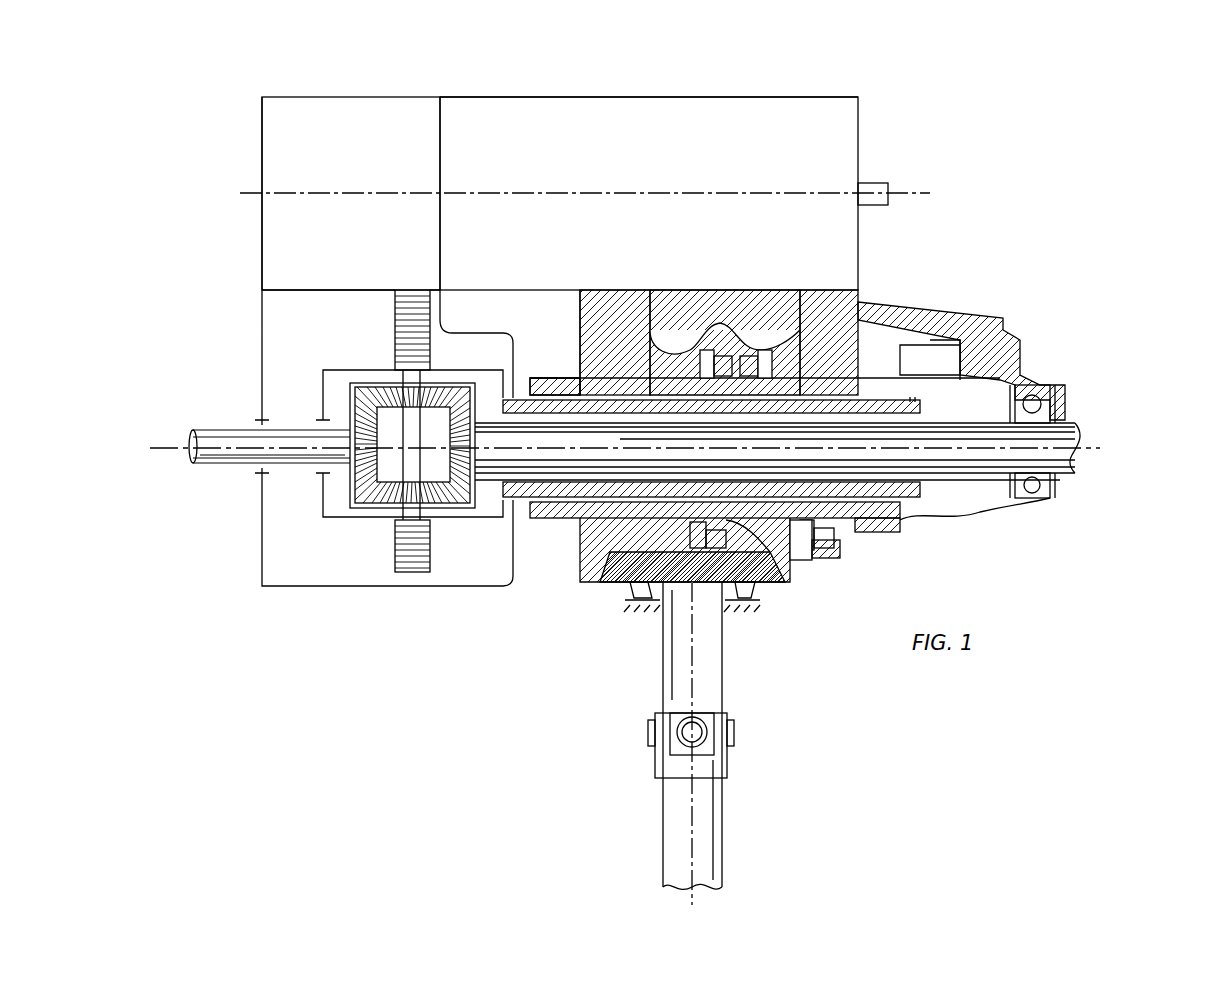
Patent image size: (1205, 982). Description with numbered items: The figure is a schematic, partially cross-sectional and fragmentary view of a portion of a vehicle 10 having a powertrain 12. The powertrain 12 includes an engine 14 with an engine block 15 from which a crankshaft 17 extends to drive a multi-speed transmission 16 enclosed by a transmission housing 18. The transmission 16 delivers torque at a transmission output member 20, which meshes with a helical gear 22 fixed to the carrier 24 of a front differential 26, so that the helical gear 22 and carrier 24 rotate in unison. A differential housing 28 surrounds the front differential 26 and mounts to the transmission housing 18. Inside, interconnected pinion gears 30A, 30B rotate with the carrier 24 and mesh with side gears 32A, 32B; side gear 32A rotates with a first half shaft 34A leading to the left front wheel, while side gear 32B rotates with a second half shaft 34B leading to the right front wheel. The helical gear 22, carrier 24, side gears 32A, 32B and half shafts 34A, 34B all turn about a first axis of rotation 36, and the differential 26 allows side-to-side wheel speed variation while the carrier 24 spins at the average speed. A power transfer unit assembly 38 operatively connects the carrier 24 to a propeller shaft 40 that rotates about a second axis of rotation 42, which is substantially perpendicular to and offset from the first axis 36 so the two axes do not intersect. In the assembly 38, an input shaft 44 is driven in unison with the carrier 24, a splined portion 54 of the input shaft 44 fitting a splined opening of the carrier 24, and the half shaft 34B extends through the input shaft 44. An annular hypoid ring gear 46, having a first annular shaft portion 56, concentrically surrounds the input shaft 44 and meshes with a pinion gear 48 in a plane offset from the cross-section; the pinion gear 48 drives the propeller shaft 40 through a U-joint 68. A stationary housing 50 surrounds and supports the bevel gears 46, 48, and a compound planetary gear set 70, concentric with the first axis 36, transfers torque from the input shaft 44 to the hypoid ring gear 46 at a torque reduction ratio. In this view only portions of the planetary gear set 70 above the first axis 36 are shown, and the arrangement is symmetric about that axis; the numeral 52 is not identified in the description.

The vehicle 10 is at (325, 83).
The powertrain 12 is at (937, 192).
The engine 14 is at (661, 228).
The engine block 15 is at (512, 97).
The multi-speed transmission 16 is at (358, 162).
The crankshaft 17 is at (873, 205).
The transmission housing 18 is at (262, 162).
The transmission output member 20 is at (406, 299).
The helical gear 22 is at (406, 355).
The differential carrier 24 is at (348, 518).
The front differential 26 is at (312, 444).
The differential housing 28 is at (262, 357).
The pinion gear 30A is at (400, 396).
The pinion gear 30B is at (400, 492).
The side gear 32A is at (367, 430).
The side gear 32B is at (462, 470).
The first half shaft 34A is at (232, 465).
The second half shaft 34B is at (506, 496).
The first axis of rotation 36 is at (150, 448).
The power transfer unit assembly 38 is at (1048, 362).
The propeller shaft 40 is at (663, 820).
The second axis of rotation 42 is at (690, 897).
The input shaft 44 is at (852, 495).
The hypoid ring gear 46 is at (782, 540).
The pinion gear 48 is at (770, 585).
The stationary housing 50 is at (557, 376).
The rotor 52 is at (822, 193).
The splined portion 54 is at (510, 395).
The first annular shaft portion 56 is at (812, 528).
The U-joint 68 is at (728, 757).
The compound planetary gear set 70 is at (957, 342).